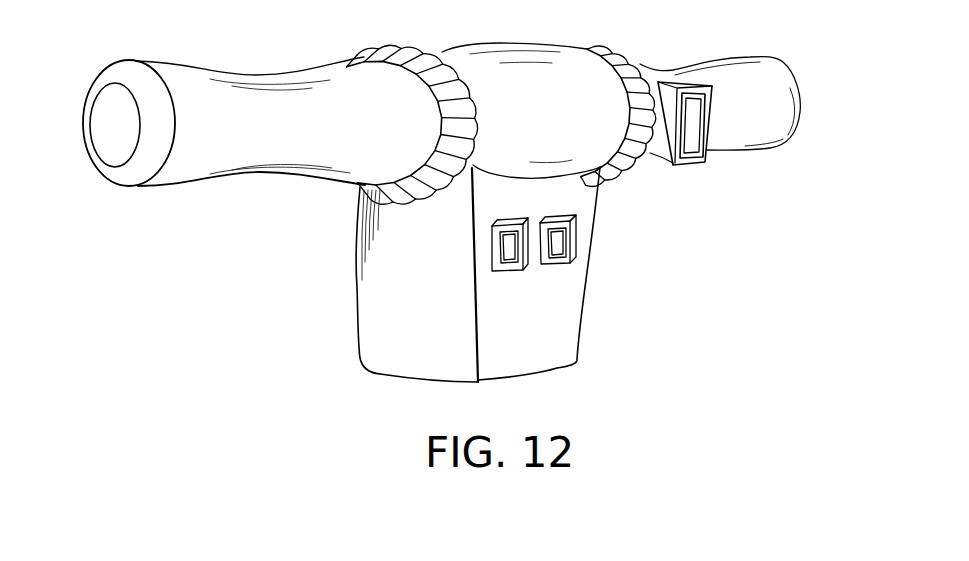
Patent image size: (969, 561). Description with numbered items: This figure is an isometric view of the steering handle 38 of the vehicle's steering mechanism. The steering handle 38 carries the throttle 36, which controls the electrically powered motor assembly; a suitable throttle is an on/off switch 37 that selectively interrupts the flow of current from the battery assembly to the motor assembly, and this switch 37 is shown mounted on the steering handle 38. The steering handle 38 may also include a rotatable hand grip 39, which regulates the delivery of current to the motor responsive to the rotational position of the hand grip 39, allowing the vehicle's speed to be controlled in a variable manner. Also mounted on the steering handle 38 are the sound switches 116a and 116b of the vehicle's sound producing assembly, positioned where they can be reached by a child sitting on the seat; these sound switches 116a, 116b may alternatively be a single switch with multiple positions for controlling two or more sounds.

The throttle 36 is at (694, 137).
The on/off switch 37 is at (677, 167).
The steering handle 38 is at (730, 62).
The rotatable hand grip 39 is at (783, 58).
The sound switch 116a is at (517, 253).
The sound switch 116b is at (567, 238).